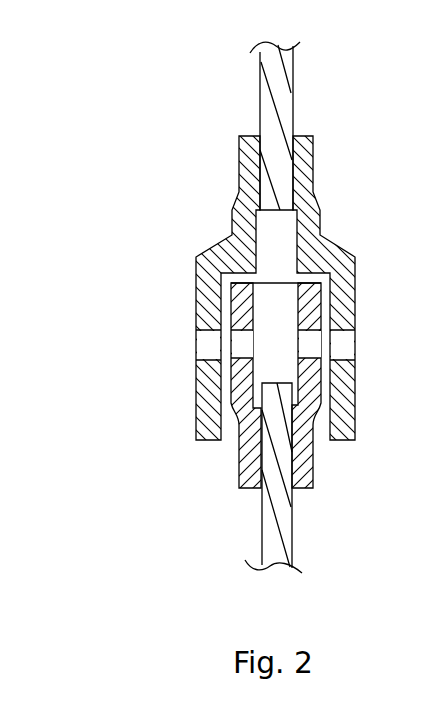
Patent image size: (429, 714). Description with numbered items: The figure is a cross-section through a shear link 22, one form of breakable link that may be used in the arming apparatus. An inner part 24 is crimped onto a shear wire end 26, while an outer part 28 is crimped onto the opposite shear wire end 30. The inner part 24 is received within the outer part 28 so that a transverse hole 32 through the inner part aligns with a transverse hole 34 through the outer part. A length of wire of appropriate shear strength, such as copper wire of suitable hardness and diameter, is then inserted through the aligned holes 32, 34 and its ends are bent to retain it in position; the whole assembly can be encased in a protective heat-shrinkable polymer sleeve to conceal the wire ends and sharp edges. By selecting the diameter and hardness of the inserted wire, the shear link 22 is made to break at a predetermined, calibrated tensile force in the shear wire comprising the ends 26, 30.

The shear link 22 is at (163, 185).
The inner part 24 is at (246, 487).
The shear wire end 26 is at (268, 539).
The outer part 28 is at (208, 276).
The opposite shear wire end 30 is at (263, 92).
The transverse hole through the inner part 32 is at (311, 351).
The transverse hole through the outer part 34 is at (213, 345).